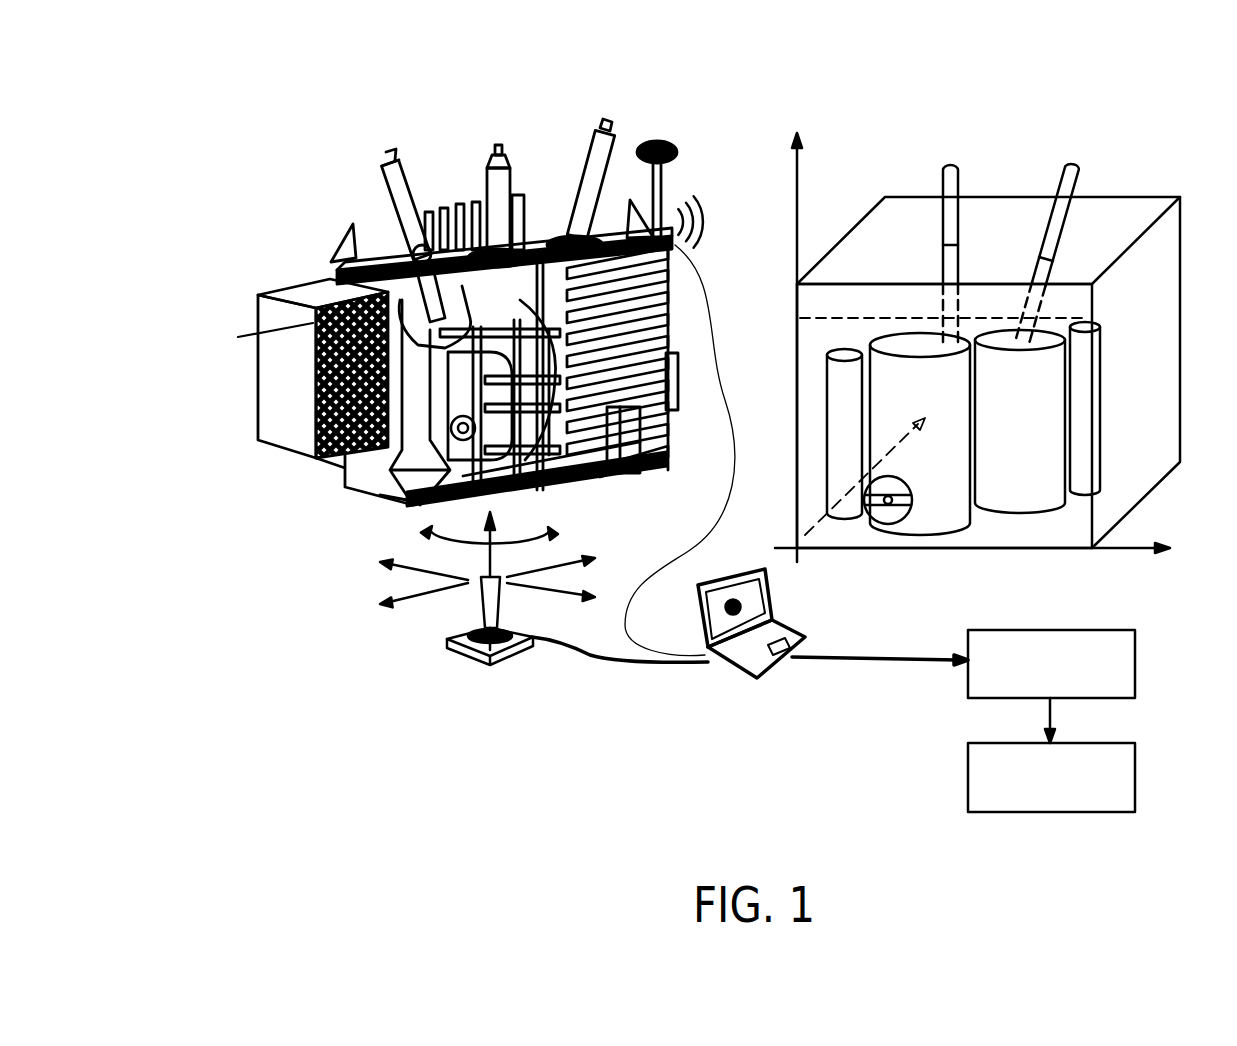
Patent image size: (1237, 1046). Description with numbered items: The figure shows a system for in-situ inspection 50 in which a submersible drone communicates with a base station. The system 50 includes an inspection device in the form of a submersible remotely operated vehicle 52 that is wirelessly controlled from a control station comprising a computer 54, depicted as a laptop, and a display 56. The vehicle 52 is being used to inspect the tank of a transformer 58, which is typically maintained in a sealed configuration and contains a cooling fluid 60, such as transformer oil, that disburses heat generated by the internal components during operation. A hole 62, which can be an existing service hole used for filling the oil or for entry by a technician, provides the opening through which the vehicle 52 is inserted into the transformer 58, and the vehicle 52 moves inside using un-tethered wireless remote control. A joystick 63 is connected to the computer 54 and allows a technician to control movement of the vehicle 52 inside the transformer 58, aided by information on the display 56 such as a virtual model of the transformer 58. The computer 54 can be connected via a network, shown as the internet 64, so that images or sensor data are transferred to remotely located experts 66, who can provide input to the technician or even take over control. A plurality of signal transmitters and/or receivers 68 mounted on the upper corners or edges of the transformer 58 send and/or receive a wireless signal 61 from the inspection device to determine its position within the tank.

The system for in-situ inspection 50 is at (750, 110).
The submersible remotely operated vehicle 52 is at (440, 492).
The computer 54 is at (716, 666).
The display 56 is at (752, 603).
The transformer 58 is at (1130, 184).
The cooling fluid 60 is at (835, 319).
The wireless signal 61 is at (706, 222).
The hole 62 is at (540, 255).
The joystick 63 is at (447, 645).
The internet 64 is at (1018, 630).
The experts 66 is at (1105, 745).
The signal transmitters and/or receivers 68 is at (332, 262).